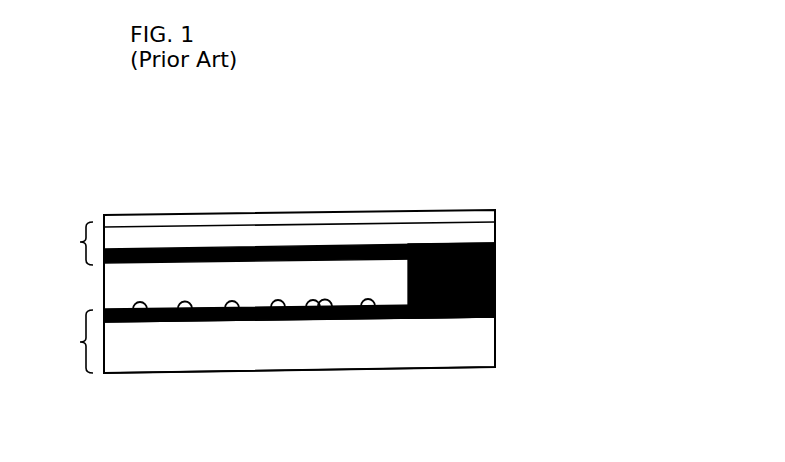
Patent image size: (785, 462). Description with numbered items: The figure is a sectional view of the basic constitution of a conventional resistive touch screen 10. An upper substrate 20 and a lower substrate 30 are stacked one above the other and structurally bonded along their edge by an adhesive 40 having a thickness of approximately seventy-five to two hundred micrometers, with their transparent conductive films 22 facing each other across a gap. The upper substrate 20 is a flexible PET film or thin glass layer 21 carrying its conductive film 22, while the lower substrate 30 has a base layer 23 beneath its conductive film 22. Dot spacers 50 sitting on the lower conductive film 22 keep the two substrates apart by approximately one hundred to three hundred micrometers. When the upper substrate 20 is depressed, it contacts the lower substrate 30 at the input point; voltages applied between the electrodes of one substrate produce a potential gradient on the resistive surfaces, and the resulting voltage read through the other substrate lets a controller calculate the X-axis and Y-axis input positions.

The resistive touch screen 10 is at (446, 162).
The upper substrate 20 is at (60, 244).
The upper substrate 21 is at (495, 230).
The transparent conductive film 22 is at (495, 252).
The lower substrate 23 is at (495, 347).
The lower substrate 30 is at (60, 341).
The adhesive 40 is at (495, 285).
The dot spacers 50 is at (302, 318).